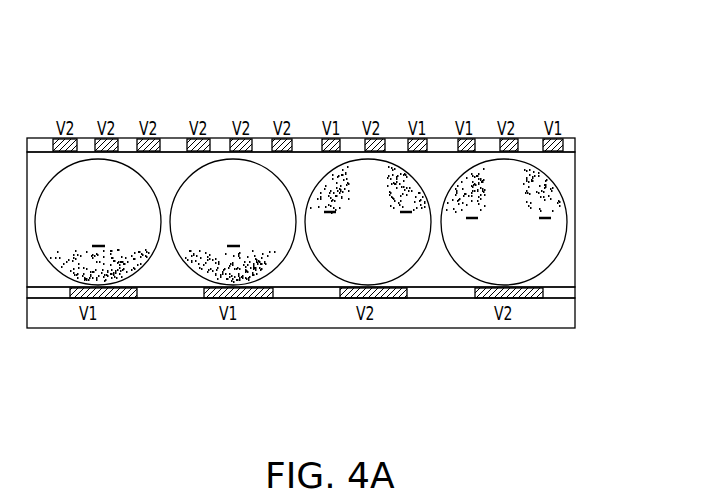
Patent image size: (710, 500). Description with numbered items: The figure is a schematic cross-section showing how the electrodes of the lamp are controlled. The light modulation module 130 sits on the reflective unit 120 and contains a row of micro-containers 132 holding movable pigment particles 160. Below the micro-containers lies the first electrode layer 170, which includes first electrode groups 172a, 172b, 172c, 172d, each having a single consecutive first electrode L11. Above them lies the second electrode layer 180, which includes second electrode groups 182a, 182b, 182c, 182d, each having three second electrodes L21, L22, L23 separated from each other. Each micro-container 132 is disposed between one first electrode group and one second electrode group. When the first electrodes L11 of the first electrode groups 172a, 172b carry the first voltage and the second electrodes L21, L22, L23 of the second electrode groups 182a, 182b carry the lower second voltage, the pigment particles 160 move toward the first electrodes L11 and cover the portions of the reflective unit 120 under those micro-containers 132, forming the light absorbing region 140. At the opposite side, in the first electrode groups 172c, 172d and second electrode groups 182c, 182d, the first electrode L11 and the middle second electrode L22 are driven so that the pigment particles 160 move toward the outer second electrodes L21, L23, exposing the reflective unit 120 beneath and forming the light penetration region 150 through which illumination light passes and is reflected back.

The reflective unit 120 is at (568, 320).
The light modulation module 130 is at (570, 208).
The micro-container 132 is at (566, 247).
The light absorbing region 140 is at (290, 287).
The light penetration region 150 is at (387, 287).
The pigment particles 160 is at (557, 185).
The first electrode layer 170 is at (568, 293).
The first electrode group 172a is at (106, 356).
The first electrode group 172b is at (253, 302).
The first electrode group 172c is at (393, 302).
The first electrode group 172d is at (528, 302).
The second electrode layer 180 is at (577, 144).
The second electrode group 182a is at (114, 97).
The second electrode group 182b is at (270, 137).
The second electrode group 182c is at (340, 138).
The second electrode group 182d is at (474, 138).
The first electrode L11 is at (118, 302).
The second electrode L21 is at (78, 137).
The second electrode L22 is at (118, 137).
The second electrode L23 is at (155, 114).